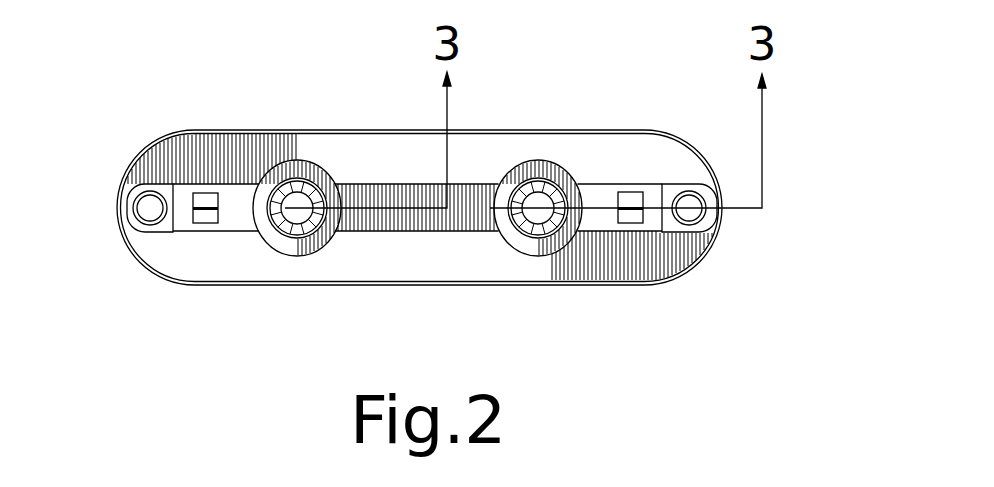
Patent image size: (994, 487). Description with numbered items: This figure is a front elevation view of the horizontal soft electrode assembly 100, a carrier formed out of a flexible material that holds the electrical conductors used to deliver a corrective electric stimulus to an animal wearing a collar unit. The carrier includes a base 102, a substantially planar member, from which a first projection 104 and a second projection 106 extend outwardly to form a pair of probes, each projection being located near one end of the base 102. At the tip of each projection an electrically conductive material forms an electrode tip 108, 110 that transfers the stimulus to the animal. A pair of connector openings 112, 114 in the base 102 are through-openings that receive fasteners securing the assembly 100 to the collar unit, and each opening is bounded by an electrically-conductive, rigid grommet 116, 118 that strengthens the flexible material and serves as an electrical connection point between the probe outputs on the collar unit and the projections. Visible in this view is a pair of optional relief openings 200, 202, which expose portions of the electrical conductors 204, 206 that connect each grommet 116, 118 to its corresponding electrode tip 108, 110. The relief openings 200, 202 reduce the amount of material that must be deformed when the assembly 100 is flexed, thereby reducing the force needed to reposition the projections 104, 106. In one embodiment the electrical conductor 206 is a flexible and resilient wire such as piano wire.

The horizontal soft electrode assembly 100 is at (792, 151).
The base 102 is at (408, 150).
The first projection 104 is at (172, 188).
The second projection 106 is at (672, 245).
The electrode tip 108 is at (148, 210).
The electrode tip 110 is at (690, 210).
The connector opening 112 is at (300, 212).
The connector opening 114 is at (551, 218).
The grommet 116 is at (310, 167).
The grommet 118 is at (565, 172).
The relief opening 200 is at (180, 214).
The relief opening 202 is at (651, 224).
The electrical conductor 204 is at (210, 205).
The electrical conductor 206 is at (633, 196).